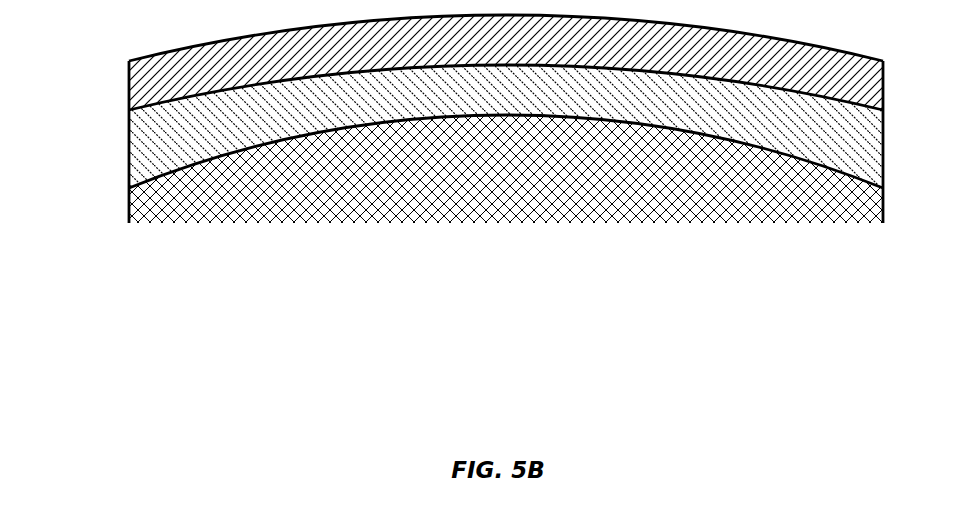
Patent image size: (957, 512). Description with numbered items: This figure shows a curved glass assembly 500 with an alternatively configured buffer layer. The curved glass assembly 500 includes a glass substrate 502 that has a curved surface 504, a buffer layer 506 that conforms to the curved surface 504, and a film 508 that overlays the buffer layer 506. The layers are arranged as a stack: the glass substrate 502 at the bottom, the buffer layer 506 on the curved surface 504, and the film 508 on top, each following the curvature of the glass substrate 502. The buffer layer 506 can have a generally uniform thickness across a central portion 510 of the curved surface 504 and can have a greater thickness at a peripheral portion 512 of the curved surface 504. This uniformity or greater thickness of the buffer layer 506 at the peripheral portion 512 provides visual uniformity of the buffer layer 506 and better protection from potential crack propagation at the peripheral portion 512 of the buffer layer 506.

The curved glass assembly 500 is at (463, 148).
The glass substrate 502 is at (506, 169).
The curved surface 504 is at (868, 188).
The buffer layer 506 is at (506, 126).
The film 508 is at (506, 62).
The central portion 510 is at (469, 152).
The peripheral portion 512 is at (139, 197).